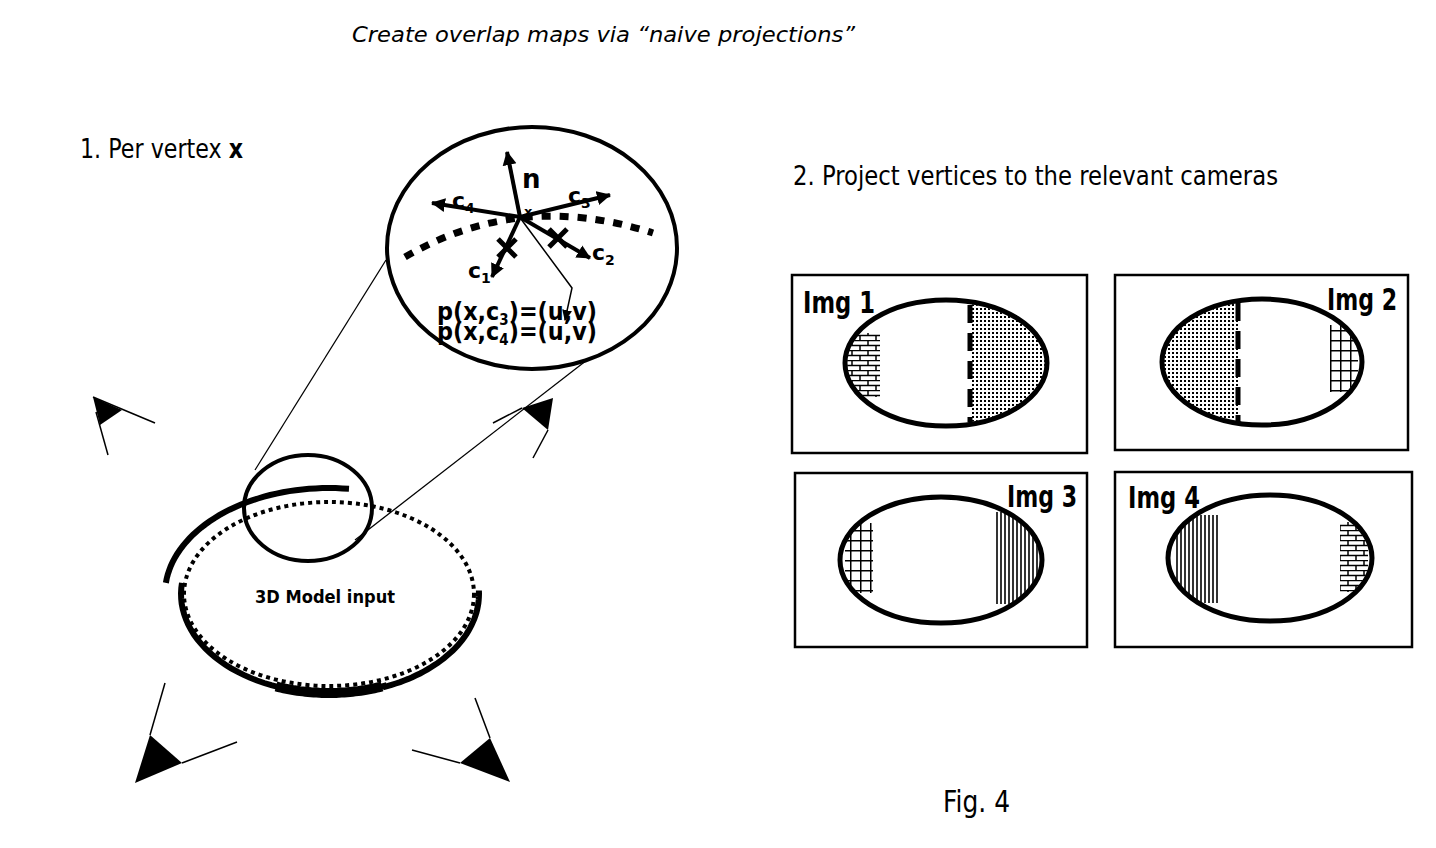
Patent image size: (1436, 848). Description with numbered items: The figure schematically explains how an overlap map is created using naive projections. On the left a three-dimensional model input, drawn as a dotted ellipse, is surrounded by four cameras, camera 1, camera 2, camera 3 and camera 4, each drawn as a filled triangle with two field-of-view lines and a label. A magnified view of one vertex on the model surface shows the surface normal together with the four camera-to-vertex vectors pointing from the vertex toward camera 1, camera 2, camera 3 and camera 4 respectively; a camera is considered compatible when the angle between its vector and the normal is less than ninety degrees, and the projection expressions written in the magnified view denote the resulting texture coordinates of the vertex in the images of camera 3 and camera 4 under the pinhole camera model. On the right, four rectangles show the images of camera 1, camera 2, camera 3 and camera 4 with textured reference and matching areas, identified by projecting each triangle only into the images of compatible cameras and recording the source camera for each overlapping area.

The camera 1 is at (138, 735).
The camera 2 is at (515, 742).
The camera 3 is at (554, 431).
The camera 4 is at (132, 418).